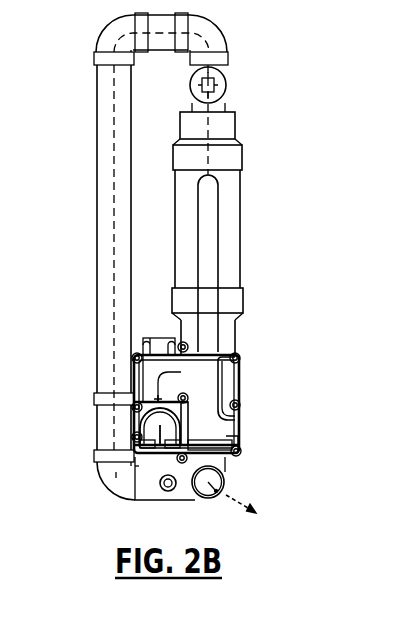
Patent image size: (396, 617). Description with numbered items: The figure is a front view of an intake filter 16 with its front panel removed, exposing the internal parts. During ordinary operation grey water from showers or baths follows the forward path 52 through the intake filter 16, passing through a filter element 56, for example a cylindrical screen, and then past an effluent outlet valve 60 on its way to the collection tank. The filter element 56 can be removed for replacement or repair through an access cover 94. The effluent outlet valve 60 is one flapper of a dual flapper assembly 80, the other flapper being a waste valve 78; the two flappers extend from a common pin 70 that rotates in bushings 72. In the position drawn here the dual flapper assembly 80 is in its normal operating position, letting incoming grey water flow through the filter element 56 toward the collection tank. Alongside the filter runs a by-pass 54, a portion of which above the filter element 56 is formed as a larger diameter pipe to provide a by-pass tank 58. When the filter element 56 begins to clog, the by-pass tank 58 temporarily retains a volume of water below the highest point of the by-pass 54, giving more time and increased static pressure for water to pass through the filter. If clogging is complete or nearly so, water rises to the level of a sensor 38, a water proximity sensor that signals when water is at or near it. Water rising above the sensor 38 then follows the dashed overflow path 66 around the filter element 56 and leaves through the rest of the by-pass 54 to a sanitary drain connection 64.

The intake filter 16 is at (272, 220).
The sensor 38 is at (217, 78).
The forward path 52 is at (236, 422).
The by-pass 54 is at (97, 243).
The filter element 56 is at (150, 378).
The by-pass tank 58 is at (240, 270).
The effluent outlet valve 60 is at (146, 425).
The sanitary drain connection 64 is at (224, 482).
The overflow path 66 is at (115, 139).
The common pin 70 is at (150, 482).
The bushings 72 is at (160, 480).
The waste valve 78 is at (240, 440).
The dual flapper assembly 80 is at (208, 440).
The access cover 94 is at (190, 411).